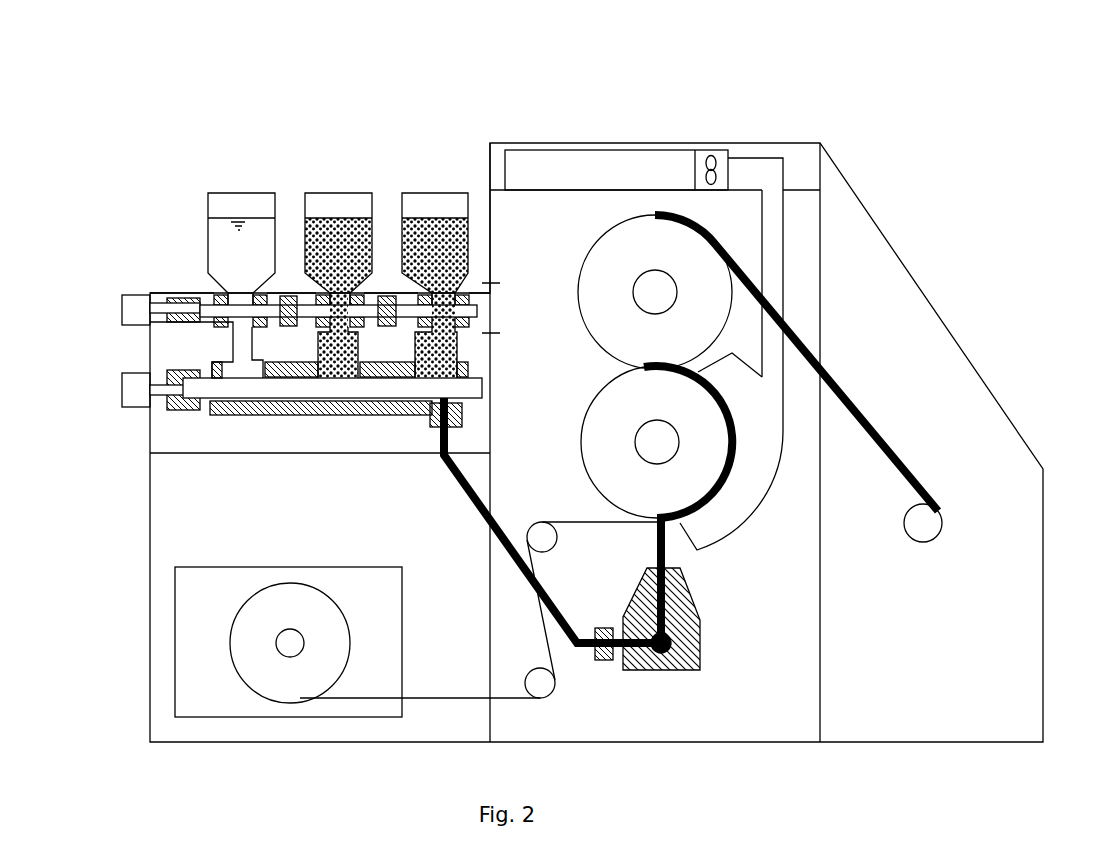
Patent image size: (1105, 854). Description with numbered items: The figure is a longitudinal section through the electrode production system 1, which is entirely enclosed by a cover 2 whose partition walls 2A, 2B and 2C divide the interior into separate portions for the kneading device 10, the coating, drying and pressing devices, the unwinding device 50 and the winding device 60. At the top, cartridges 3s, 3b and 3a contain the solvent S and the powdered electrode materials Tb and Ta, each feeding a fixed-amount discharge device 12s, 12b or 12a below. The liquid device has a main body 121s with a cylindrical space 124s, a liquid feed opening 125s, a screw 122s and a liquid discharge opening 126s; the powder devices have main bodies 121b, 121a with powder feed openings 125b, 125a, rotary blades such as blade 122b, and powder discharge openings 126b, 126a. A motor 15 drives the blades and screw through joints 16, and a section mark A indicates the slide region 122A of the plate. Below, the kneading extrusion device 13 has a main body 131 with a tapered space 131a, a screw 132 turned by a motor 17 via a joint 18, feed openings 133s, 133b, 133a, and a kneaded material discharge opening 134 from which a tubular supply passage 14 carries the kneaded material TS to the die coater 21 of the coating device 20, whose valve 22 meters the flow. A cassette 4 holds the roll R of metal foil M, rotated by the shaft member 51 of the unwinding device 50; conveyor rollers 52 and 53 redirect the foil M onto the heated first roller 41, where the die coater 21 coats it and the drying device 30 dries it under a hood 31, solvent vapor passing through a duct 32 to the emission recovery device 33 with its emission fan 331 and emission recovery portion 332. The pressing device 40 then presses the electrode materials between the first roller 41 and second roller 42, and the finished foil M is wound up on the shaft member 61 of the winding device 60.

The electrode production system 1 is at (557, 90).
The cover 2 is at (866, 209).
The partition wall 2A is at (490, 472).
The partition wall 2B is at (437, 454).
The partition wall 2C is at (822, 302).
The cartridge 3s is at (215, 193).
The cartridge 3a is at (437, 193).
The cartridge 3b is at (372, 193).
The solvent S is at (237, 215).
The electrode material Ta is at (450, 227).
The electrode material Tb is at (338, 225).
The cassette 4 is at (197, 630).
The kneading device 10 is at (95, 190).
The fixed-amount discharge device 12a is at (468, 327).
The fixed-amount discharge device 12b is at (338, 352).
The fixed-amount discharge device 12s is at (245, 345).
The kneading extrusion device 13 is at (310, 443).
The supply passage 14 is at (486, 515).
The motor 15 is at (144, 302).
The joint 16 is at (195, 300).
The motor 17 is at (148, 384).
The joint 18 is at (165, 394).
The coating device 20 is at (645, 670).
The die coater 21 is at (672, 672).
The valve 22 is at (604, 661).
The drying device 30 is at (738, 471).
The hood 31 is at (764, 492).
The duct 32 is at (783, 304).
The emission recovery device 33 is at (616, 135).
The emission fan 331 is at (708, 151).
The emission recovery portion 332 is at (667, 150).
The pressing device 40 is at (616, 364).
The first roller 41 is at (595, 415).
The second roller 42 is at (602, 253).
The unwinding device 50 is at (379, 649).
The shaft member 51 is at (285, 653).
The roller 52 is at (552, 685).
The roller 53 is at (547, 540).
The winding device 60 is at (1012, 504).
The shaft member 61 is at (942, 524).
The roll R is at (287, 690).
The metal foil M is at (430, 702).
The kneaded material TS is at (462, 490).
The section line A is at (500, 305).
The main body 121a is at (478, 293).
The main body 121b is at (370, 280).
The main body 121s is at (285, 275).
The slide plate end 122A is at (478, 311).
The rotary blade 122b is at (383, 296).
The screw 122s is at (177, 323).
The cylindrical space 124s is at (218, 297).
The powder feed opening 125a is at (406, 294).
The powder feed opening 125b is at (292, 293).
The liquid feed opening 125s is at (212, 296).
The powder discharge opening 126a is at (390, 329).
The powder discharge opening 126b is at (318, 329).
The liquid discharge opening 126s is at (233, 332).
The main body 131 is at (215, 412).
The space 131a is at (252, 404).
The screw 132 is at (233, 402).
The powder feed opening 133a is at (412, 374).
The powder feed opening 133b is at (366, 374).
The liquid feed opening 133s is at (233, 348).
The kneaded material discharge opening 134 is at (462, 419).